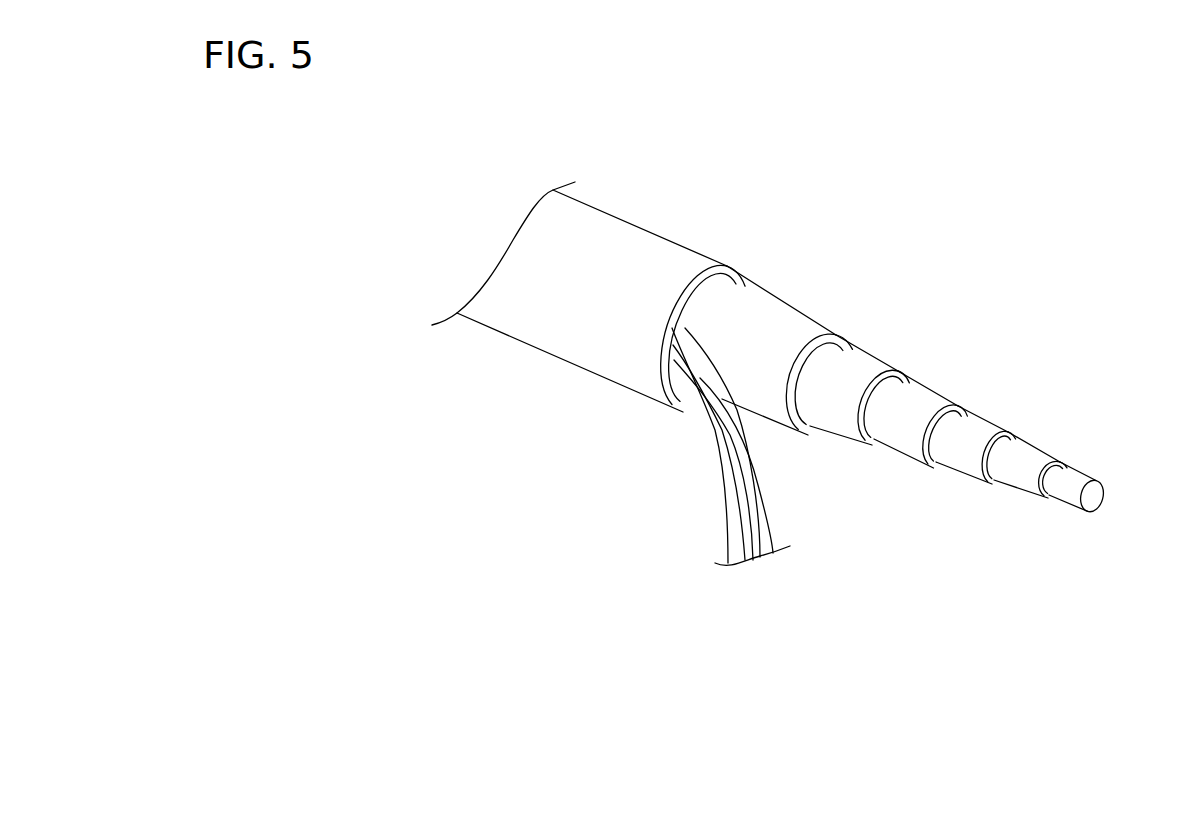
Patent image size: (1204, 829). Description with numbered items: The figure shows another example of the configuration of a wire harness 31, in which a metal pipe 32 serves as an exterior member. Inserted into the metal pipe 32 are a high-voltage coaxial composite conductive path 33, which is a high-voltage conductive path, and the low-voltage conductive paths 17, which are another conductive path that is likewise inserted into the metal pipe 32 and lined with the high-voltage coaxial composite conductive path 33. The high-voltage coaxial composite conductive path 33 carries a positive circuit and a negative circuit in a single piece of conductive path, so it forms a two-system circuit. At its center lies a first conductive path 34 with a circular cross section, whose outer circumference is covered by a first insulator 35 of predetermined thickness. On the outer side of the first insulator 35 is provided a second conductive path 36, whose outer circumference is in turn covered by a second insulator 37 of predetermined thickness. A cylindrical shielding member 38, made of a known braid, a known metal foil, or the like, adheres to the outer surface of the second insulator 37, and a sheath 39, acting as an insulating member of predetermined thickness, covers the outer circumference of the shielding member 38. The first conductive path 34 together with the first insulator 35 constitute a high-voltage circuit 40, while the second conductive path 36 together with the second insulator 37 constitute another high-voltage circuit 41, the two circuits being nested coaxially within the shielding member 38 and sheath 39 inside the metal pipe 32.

The low-voltage conductive paths 17 is at (738, 537).
The wire harness 31 is at (936, 293).
The metal pipe 32 is at (618, 237).
The high-voltage coaxial composite conductive path 33 is at (983, 390).
The first conductive path 34 is at (1067, 490).
The first insulator 35 is at (1020, 480).
The second conductive path 36 is at (965, 465).
The second insulator 37 is at (898, 443).
The shielding member 38 is at (843, 428).
The sheath 39 is at (783, 330).
The high-voltage circuit 40 is at (1007, 620).
The high-voltage circuit 41 is at (1007, 707).